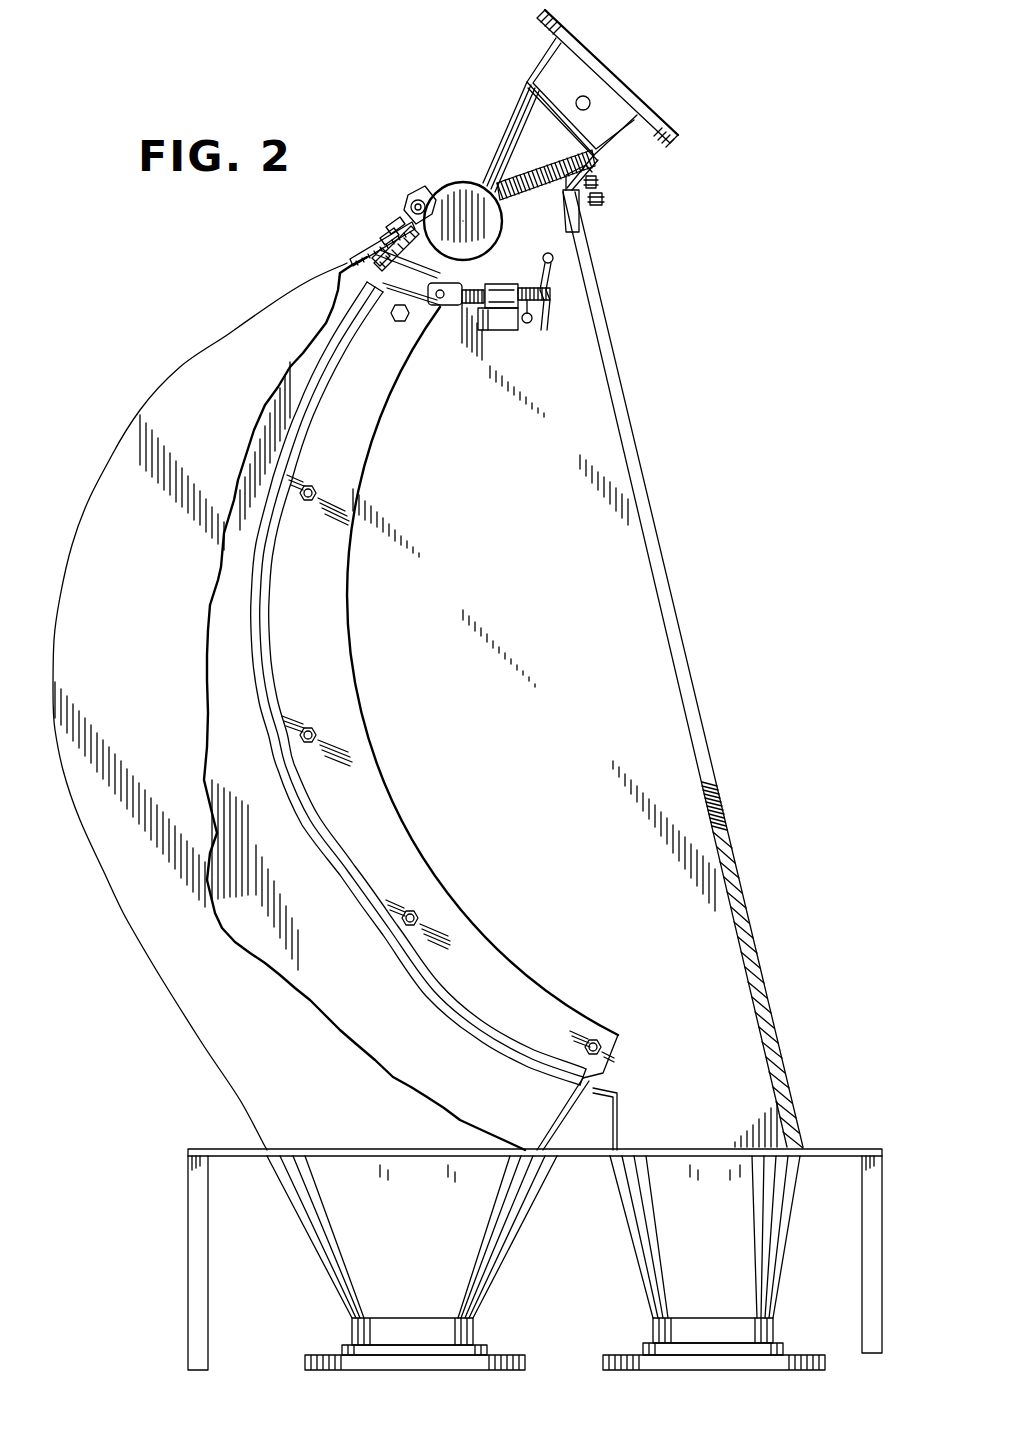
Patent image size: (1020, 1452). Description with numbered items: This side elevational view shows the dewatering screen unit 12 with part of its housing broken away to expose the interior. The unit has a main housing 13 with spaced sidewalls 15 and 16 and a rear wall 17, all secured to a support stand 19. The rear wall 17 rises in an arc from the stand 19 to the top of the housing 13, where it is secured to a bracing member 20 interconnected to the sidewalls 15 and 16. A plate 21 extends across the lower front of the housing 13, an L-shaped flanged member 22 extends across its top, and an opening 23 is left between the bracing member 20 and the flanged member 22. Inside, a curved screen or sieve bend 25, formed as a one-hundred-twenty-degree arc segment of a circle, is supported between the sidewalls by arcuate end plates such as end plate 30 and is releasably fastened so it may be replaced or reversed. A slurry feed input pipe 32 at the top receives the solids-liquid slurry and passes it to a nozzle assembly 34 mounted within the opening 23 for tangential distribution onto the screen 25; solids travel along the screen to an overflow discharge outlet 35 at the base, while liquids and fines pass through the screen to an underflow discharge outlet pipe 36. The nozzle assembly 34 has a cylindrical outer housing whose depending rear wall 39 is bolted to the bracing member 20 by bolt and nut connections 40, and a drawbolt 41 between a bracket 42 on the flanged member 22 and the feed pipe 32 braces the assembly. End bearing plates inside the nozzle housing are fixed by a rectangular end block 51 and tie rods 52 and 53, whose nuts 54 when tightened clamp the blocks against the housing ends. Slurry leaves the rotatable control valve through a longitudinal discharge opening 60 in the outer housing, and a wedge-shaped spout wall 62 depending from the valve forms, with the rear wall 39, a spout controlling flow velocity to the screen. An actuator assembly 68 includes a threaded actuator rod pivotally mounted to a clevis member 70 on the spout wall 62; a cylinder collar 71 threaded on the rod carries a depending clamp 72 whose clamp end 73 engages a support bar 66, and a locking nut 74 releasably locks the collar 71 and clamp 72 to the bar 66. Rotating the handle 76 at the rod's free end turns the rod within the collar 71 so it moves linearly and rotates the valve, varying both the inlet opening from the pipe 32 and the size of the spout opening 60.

The dewatering screen unit 12 is at (680, 373).
The main housing 13 is at (235, 299).
The sidewall 15 is at (118, 560).
The sidewall 16 is at (536, 552).
The rear wall 17 is at (155, 968).
The support stand 19 is at (834, 1138).
The bracing member 20 is at (368, 254).
The plate 21 is at (718, 846).
The L-shaped flanged member 22 is at (547, 184).
The opening 23 is at (574, 226).
The curved screen or sieve bend 25 is at (310, 775).
The arcuate end plate 30 is at (328, 634).
The slurry feed input pipe 32 is at (530, 110).
The nozzle assembly 34 is at (446, 176).
The overflow discharge outlet 35 is at (735, 1323).
The underflow discharge outlet pipe 36 is at (462, 1308).
The depending rear wall 39 is at (383, 241).
The bolt and nut connection 40 is at (392, 230).
The drawbolt 41 is at (591, 181).
The bracket 42 is at (601, 198).
The end block 51 is at (414, 192).
The tie rod 52 is at (411, 203).
The tie rod 53 is at (512, 195).
The nut 54 is at (430, 208).
The longitudinal discharge opening 60 is at (386, 268).
The wedge shaped wall member 62 is at (403, 310).
The support bar 66 is at (508, 331).
The actuator assembly 68 is at (527, 333).
The clevis member 70 is at (433, 307).
The cylinder collar 71 is at (503, 318).
The clamp portion 72 is at (497, 300).
The clamp end 73 is at (475, 305).
The locking nut 74 is at (527, 287).
The handle 76 is at (553, 268).